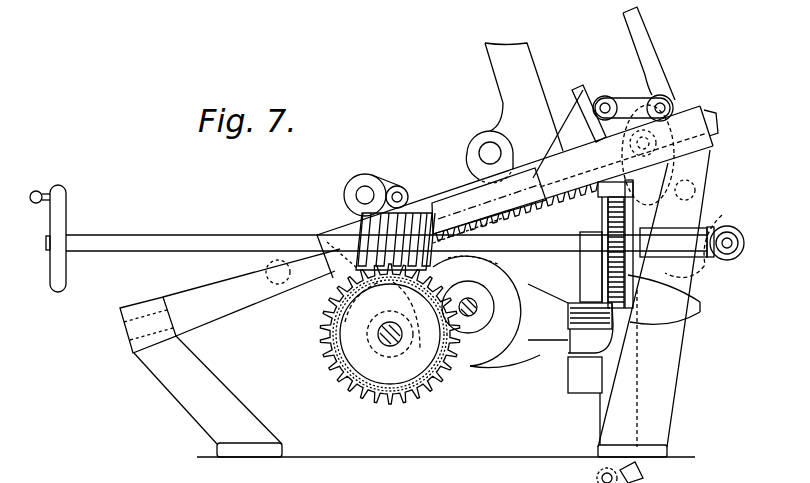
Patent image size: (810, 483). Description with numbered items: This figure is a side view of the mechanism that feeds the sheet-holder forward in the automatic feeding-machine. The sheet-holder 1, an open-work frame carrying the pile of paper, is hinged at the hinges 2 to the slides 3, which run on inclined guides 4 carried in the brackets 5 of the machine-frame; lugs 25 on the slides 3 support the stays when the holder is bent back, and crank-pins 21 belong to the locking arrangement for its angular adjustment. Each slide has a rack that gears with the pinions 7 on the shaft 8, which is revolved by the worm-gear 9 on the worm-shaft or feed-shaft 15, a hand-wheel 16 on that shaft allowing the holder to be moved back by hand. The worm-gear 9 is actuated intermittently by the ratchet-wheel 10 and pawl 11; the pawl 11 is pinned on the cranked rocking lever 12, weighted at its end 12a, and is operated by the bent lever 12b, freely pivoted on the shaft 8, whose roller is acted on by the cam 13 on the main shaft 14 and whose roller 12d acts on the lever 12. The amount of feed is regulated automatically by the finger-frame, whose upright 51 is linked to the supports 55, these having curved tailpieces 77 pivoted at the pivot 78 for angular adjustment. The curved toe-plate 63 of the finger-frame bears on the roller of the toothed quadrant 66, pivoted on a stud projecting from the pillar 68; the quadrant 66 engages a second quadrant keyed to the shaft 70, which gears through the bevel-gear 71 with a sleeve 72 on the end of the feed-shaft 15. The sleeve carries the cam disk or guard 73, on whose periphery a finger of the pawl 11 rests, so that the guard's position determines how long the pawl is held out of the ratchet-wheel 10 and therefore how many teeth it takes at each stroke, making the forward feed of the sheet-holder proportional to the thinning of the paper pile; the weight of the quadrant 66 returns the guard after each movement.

The sheet-holder 1 is at (512, 91).
The hinges 2 is at (480, 154).
The slides 3 is at (456, 196).
The inclined guides 4 is at (247, 300).
The brackets 5 is at (422, 303).
The pinions 7 is at (330, 362).
The shaft 8 is at (385, 345).
The worm-gear 9 is at (348, 236).
The ratchet-wheel 10 is at (645, 315).
The pawl 11 is at (600, 213).
The cranked rocking lever 12 is at (562, 312).
The weighted end 12a is at (580, 382).
The bent lever 12b is at (527, 305).
The roller 12d is at (580, 322).
The cam 13 is at (468, 300).
The main shaft 14 is at (473, 318).
The worm-shaft or feed-shaft 15 is at (178, 240).
The hand-wheel 16 is at (62, 222).
The crank-pins 21 is at (393, 188).
The lugs 25 is at (277, 286).
The upright 51 is at (579, 88).
The supports 55 is at (650, 68).
The curved toe-plate 63 is at (558, 134).
The toothed quadrant 66 is at (722, 215).
The pillar 68 is at (607, 398).
The shaft 70 is at (733, 228).
The bevel-gear 71 is at (745, 244).
The sleeve 72 is at (680, 288).
The cam disk or guard 73 is at (707, 307).
The curved tailpieces 77 is at (672, 97).
The pivot 78 is at (693, 110).